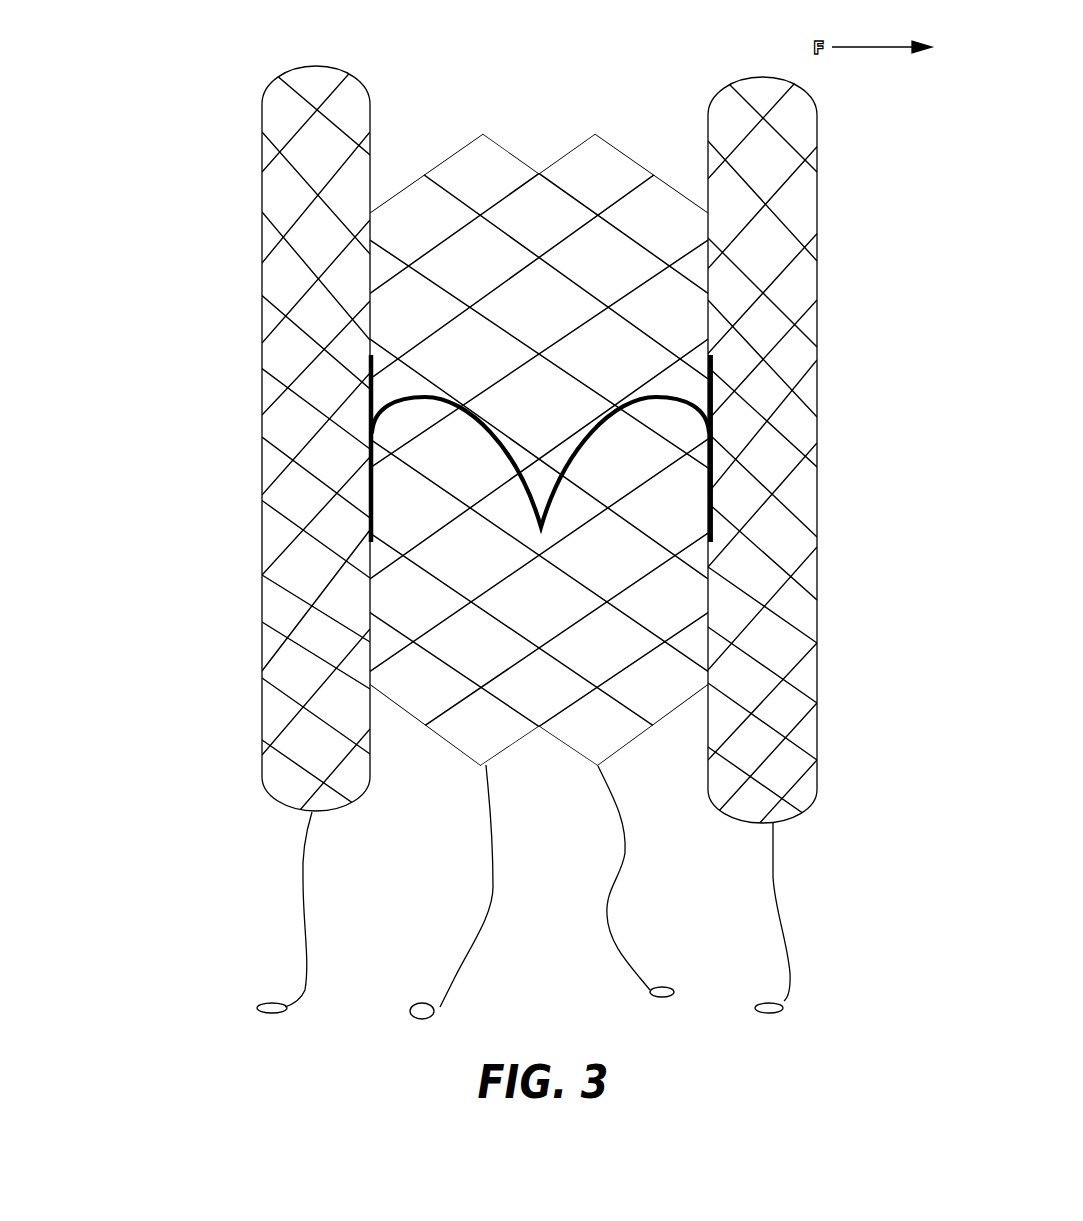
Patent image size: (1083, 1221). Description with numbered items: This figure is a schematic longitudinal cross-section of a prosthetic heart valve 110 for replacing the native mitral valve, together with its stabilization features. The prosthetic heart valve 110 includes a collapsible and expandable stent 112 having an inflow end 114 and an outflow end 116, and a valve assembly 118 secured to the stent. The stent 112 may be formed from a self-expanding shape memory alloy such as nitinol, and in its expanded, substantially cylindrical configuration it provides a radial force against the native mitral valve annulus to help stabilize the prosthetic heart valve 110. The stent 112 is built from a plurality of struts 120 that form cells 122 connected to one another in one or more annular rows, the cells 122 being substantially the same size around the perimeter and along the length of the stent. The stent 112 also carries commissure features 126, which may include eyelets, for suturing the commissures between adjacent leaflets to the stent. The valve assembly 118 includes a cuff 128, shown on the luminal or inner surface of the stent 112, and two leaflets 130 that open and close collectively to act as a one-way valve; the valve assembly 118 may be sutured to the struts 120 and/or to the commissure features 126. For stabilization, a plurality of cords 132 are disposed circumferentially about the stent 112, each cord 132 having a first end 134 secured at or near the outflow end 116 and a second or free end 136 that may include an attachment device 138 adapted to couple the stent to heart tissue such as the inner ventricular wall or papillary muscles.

The prosthetic heart valve 110 is at (160, 419).
The stent 112 is at (228, 260).
The inflow end 114 is at (525, 88).
The outflow end 116 is at (407, 798).
The valve assembly 118 is at (738, 424).
The struts 120 is at (374, 138).
The cells 122 is at (685, 173).
The commissure features 126 is at (371, 357).
The cuff 128 is at (715, 514).
The leaflets 130 is at (713, 380).
The cords 132 is at (303, 877).
The first end 134 is at (776, 826).
The second end 136 is at (786, 1001).
The attachment device 138 is at (257, 1007).